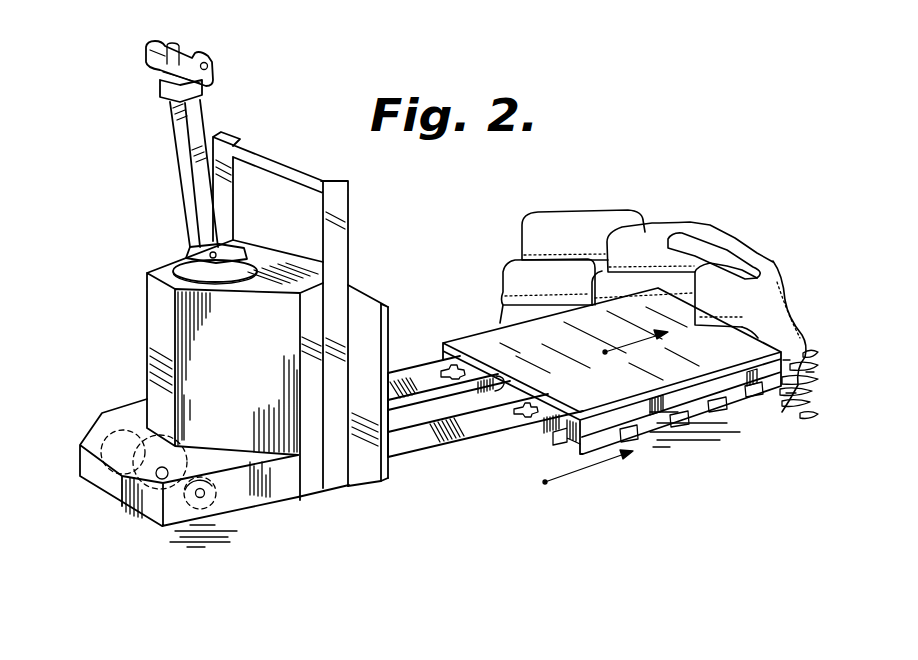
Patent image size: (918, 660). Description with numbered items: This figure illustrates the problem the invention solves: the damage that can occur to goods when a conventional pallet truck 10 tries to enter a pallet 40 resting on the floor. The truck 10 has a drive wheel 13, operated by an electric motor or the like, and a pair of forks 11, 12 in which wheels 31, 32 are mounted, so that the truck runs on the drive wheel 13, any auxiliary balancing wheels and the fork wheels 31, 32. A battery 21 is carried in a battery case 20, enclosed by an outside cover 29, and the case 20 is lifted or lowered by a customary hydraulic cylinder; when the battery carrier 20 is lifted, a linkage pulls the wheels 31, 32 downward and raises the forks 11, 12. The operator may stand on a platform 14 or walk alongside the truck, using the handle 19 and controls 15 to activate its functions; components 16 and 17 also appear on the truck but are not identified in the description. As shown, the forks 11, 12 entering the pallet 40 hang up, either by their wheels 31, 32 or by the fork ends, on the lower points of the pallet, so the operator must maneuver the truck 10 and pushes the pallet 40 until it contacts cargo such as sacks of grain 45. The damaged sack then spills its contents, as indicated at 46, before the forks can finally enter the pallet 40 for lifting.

The pallet truck 10 is at (300, 520).
The fork 11 is at (440, 452).
The fork 12 is at (410, 376).
The drive wheel 13 is at (142, 513).
The platform 14 is at (102, 415).
The controls 15 is at (180, 44).
The mast frame 16 is at (342, 228).
The body housing 17 is at (150, 317).
The handle 19 is at (180, 170).
The battery case 20 is at (368, 470).
The battery 21 is at (357, 303).
The outside cover 29 is at (392, 308).
The fork wheel 31 is at (466, 370).
The fork wheel 32 is at (540, 410).
The pallet 40 is at (668, 362).
The sacks of grain 45 is at (753, 248).
The spilled contents 46 is at (790, 407).